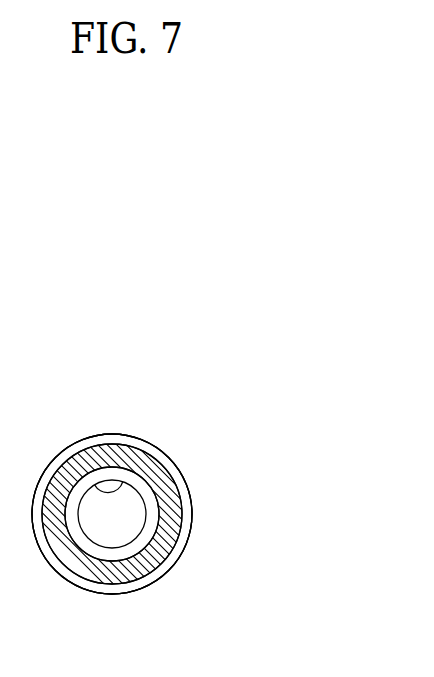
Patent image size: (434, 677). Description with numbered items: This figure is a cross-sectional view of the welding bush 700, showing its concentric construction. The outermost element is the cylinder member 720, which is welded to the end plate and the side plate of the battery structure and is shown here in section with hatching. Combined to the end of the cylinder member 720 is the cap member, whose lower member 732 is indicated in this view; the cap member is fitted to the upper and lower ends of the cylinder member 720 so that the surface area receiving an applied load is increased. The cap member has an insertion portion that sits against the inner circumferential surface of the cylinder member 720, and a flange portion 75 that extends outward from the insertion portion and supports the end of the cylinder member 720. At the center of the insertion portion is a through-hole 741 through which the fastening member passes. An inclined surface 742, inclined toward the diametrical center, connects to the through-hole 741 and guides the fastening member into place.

The welding bush 700 is at (168, 402).
The cylinder member 720 is at (88, 562).
The lower member 732 is at (214, 506).
The through-hole 741 is at (93, 484).
The inclined surface 742 is at (145, 490).
The flange portion 75 is at (164, 576).